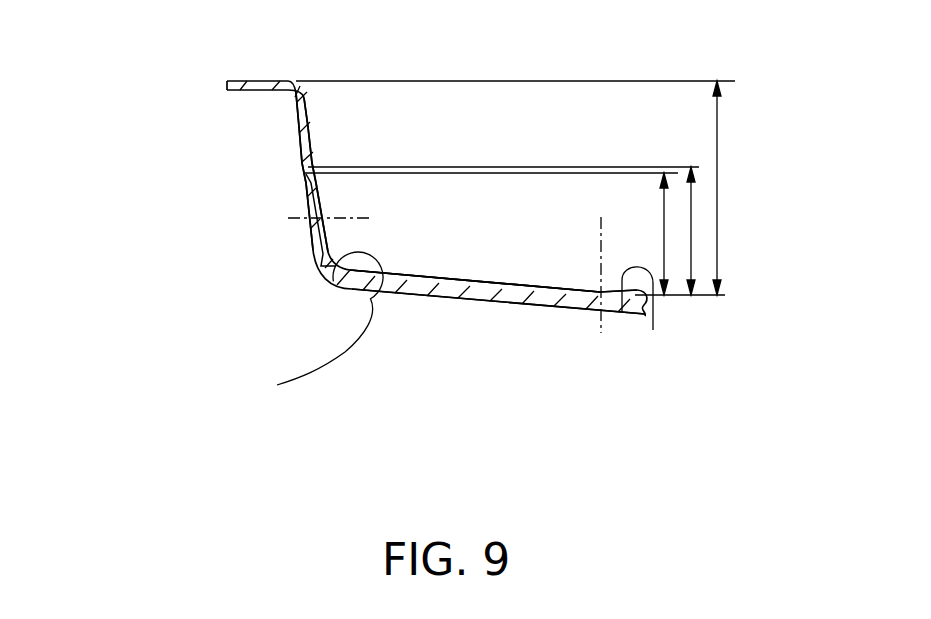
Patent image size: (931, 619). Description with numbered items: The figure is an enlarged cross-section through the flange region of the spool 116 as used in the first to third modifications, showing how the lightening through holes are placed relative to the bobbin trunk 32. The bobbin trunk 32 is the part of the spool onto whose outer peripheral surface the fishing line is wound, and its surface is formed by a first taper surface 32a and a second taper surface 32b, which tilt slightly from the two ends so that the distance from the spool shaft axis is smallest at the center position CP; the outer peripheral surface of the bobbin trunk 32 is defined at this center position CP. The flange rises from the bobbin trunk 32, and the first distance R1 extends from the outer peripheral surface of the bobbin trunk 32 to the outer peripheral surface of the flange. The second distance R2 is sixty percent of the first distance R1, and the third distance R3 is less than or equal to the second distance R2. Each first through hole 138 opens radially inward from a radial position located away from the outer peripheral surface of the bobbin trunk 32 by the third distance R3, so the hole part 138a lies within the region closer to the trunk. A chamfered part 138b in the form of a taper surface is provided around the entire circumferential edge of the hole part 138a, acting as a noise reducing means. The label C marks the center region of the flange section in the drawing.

The spool 116 is at (437, 62).
The first through hole 138 is at (305, 187).
The hole part 138a is at (302, 178).
The chamfered part 138b is at (267, 303).
The bobbin trunk 32 is at (518, 284).
The first taper surface 32a is at (462, 280).
The second taper surface 32b is at (653, 330).
The center line C is at (300, 232).
The center position CP is at (600, 322).
The first distance R1 is at (717, 140).
The second distance R2 is at (691, 223).
The third distance R3 is at (664, 258).